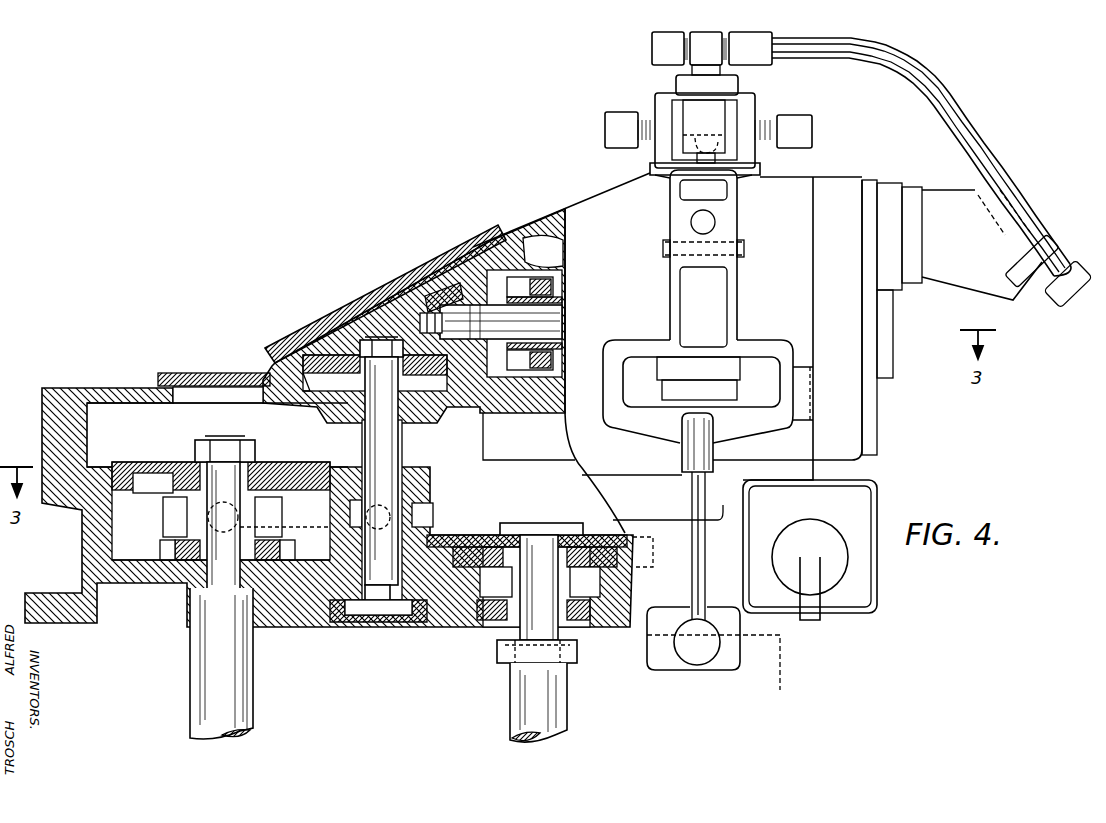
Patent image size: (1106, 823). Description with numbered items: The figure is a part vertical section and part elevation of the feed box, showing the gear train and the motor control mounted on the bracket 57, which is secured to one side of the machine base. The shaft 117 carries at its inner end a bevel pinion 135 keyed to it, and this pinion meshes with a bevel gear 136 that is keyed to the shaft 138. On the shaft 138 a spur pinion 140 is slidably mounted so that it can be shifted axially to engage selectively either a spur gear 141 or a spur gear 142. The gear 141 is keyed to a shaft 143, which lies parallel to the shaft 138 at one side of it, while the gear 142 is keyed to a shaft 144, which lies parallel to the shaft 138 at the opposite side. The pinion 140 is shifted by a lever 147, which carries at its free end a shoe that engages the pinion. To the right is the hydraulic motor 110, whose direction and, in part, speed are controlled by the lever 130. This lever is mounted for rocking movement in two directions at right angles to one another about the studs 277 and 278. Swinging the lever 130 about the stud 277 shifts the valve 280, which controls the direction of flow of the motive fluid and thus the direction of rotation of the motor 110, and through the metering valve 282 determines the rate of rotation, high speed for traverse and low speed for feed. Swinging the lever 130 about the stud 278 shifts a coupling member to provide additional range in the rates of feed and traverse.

The bracket 57 is at (85, 545).
The hydraulic motor 110 is at (955, 270).
The shaft 117 is at (548, 320).
The lever 130 is at (695, 492).
The bevel pinion 135 is at (440, 303).
The bevel gear 136 is at (340, 355).
The shaft 138 is at (400, 430).
The spur pinion 140 is at (423, 500).
The spur gear 141 is at (272, 467).
The spur gear 142 is at (447, 535).
The shaft 143 is at (237, 670).
The shaft 144 is at (550, 700).
The lever 147 is at (307, 543).
The stud 277 is at (715, 220).
The stud 278 is at (744, 248).
The valve 280 is at (812, 130).
The metering valve 282 is at (832, 565).